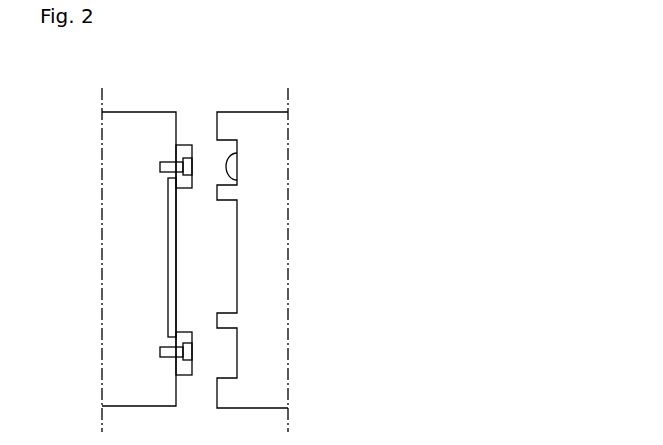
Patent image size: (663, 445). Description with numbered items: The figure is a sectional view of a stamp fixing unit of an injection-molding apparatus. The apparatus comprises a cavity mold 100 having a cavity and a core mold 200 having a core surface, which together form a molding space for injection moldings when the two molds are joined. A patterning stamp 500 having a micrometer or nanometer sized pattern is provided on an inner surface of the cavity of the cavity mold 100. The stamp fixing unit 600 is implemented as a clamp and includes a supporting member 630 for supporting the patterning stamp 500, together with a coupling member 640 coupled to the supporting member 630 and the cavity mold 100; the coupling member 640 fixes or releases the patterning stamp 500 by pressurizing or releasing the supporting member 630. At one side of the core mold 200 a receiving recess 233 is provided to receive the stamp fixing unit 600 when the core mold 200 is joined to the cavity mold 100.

The cavity mold 100 is at (140, 107).
The core mold 200 is at (252, 107).
The receiving recess 233 is at (240, 154).
The patterning stamp 500 is at (180, 270).
The stamp fixing unit 600 is at (187, 135).
The supporting member 630 is at (178, 150).
The coupling member 640 is at (160, 167).